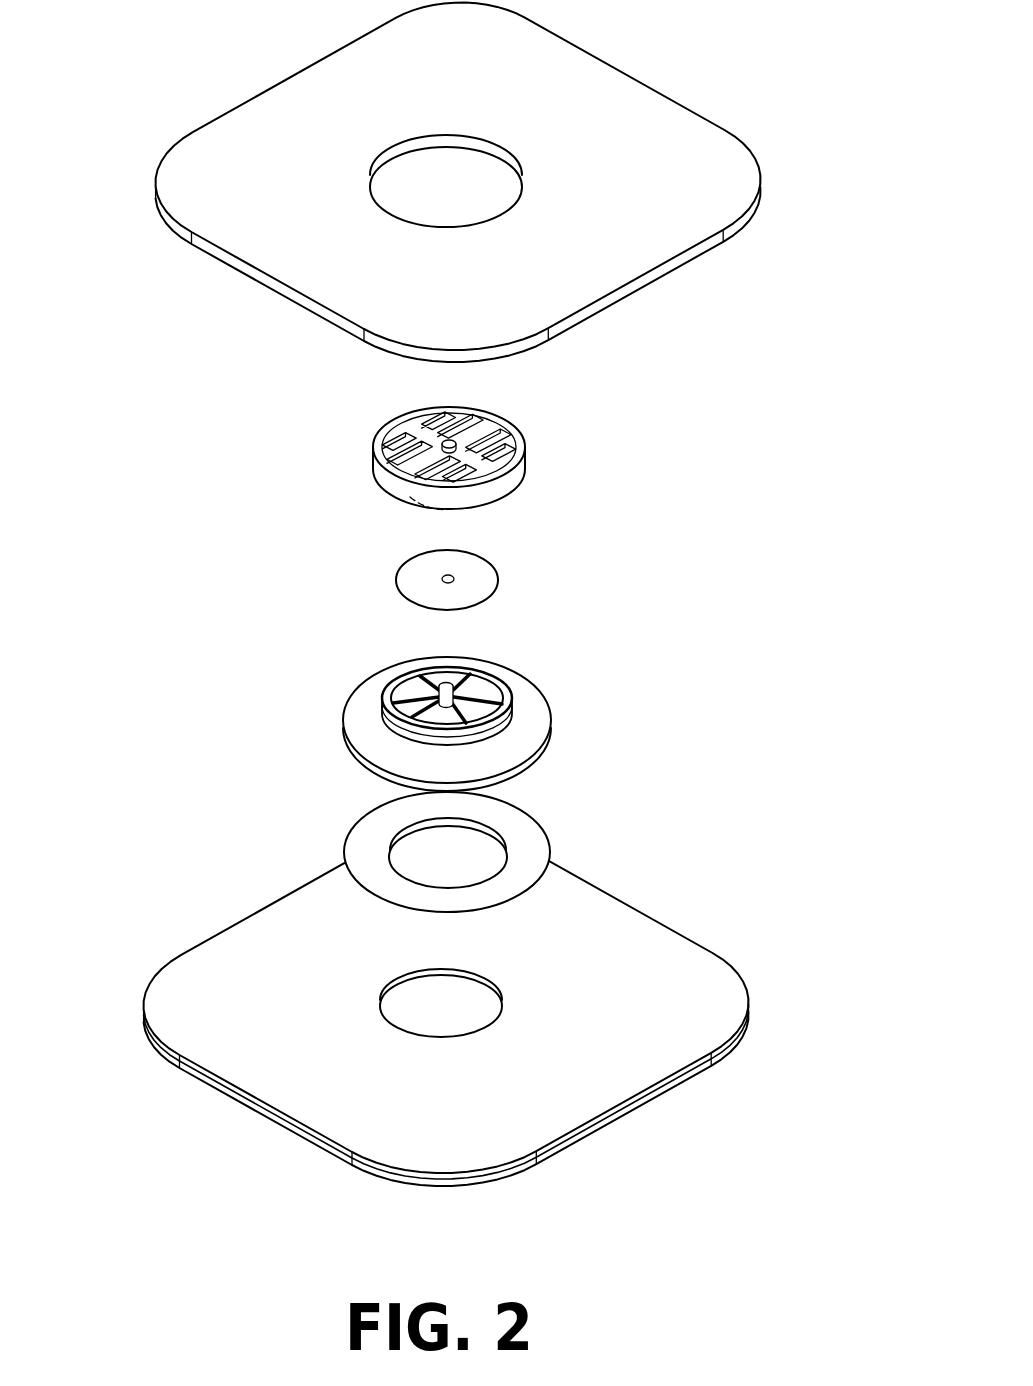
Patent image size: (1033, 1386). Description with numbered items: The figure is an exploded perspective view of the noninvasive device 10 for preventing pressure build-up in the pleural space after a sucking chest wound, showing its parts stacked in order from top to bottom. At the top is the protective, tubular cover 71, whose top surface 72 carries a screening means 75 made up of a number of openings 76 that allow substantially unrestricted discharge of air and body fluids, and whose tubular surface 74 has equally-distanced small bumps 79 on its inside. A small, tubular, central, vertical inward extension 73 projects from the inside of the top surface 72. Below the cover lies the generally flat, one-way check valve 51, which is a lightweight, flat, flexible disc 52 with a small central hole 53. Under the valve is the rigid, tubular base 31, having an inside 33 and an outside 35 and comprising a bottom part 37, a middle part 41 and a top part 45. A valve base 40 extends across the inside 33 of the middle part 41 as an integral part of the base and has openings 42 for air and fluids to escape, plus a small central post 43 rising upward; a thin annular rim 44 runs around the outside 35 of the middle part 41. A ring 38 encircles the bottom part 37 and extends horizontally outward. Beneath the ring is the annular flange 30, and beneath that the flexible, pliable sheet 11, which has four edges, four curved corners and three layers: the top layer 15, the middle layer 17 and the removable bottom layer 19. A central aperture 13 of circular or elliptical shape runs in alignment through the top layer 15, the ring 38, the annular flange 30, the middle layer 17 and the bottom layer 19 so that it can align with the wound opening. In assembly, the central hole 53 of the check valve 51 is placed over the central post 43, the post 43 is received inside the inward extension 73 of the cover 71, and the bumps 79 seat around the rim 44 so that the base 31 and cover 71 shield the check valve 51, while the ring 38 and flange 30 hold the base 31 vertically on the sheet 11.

The noninvasive device 10 is at (122, 1179).
The flexible, pliable sheet 11 is at (235, 917).
The central aperture 13 is at (490, 148).
The top layer 15 is at (501, 185).
The middle layer 17 is at (497, 1036).
The bottom layer 19 is at (446, 1123).
The annular flange 30 is at (563, 852).
The rigid, tubular base 31 is at (522, 718).
The inside of tubular base 33 is at (413, 665).
The outside of tubular base 35 is at (480, 703).
The bottom part of tubular base 37 is at (420, 762).
The ring 38 is at (541, 738).
The valve base 40 is at (452, 684).
The middle part of tubular base 41 is at (400, 722).
The openings 42 is at (478, 709).
The central post 43 is at (470, 690).
The thin, annular rim 44 is at (520, 733).
The top part of tubular base 45 is at (392, 692).
The one-way check valve 51 is at (558, 609).
The flexible disc 52 is at (477, 595).
The central hole 53 is at (455, 583).
The protective, tubular cover 71 is at (492, 477).
The top surface of cover 72 is at (435, 408).
The inward extension 73 is at (440, 452).
The tubular surface of cover 74 is at (372, 465).
The screening means 75 is at (452, 460).
The openings of screening means 76 is at (495, 452).
The small bumps 79 is at (443, 512).